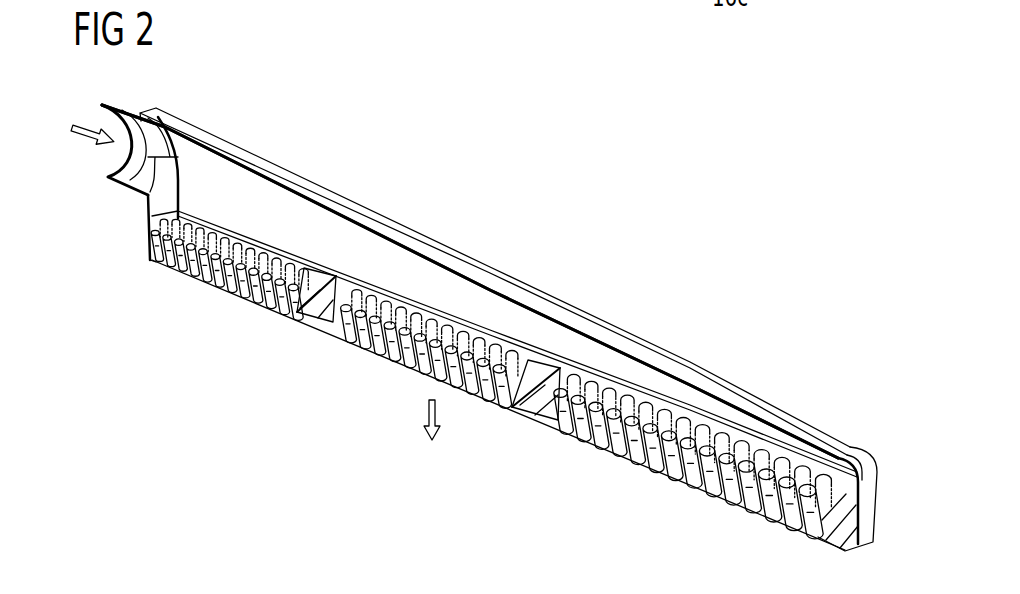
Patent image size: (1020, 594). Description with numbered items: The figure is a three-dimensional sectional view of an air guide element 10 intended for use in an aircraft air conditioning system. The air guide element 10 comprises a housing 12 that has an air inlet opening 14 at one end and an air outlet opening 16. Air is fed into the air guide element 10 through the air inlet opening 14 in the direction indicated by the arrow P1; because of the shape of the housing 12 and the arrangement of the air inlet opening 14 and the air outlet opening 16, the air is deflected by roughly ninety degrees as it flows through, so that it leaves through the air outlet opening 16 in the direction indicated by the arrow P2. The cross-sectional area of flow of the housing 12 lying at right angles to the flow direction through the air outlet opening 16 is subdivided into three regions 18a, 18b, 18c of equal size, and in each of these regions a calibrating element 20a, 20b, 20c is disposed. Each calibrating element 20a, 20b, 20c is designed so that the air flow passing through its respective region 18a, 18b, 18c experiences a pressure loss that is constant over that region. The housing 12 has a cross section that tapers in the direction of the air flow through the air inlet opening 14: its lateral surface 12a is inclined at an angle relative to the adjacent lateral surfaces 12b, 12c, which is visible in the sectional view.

The air guide element 10 is at (625, 200).
The housing 12 is at (213, 160).
The lateral surface 12a is at (780, 420).
The lateral surface 12b is at (150, 214).
The lateral surface 12c is at (863, 507).
The air inlet opening 14 is at (118, 155).
The air outlet opening 16 is at (777, 523).
The region 18a is at (220, 296).
The region 18b is at (400, 383).
The region 18c is at (680, 492).
The calibrating element 20a is at (233, 233).
The calibrating element 20b is at (463, 327).
The calibrating element 20c is at (683, 417).
The arrow P1 is at (97, 127).
The arrow P2 is at (437, 413).